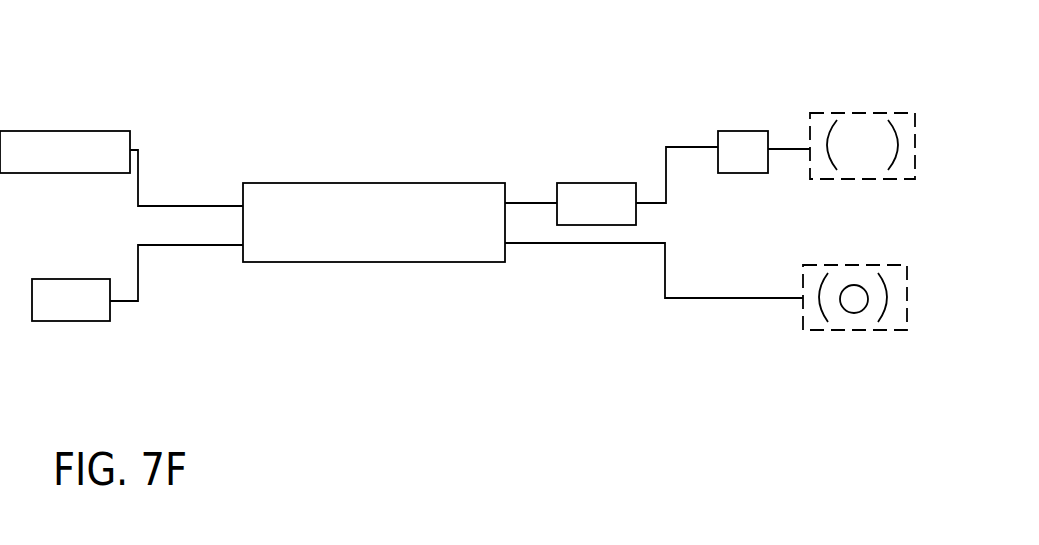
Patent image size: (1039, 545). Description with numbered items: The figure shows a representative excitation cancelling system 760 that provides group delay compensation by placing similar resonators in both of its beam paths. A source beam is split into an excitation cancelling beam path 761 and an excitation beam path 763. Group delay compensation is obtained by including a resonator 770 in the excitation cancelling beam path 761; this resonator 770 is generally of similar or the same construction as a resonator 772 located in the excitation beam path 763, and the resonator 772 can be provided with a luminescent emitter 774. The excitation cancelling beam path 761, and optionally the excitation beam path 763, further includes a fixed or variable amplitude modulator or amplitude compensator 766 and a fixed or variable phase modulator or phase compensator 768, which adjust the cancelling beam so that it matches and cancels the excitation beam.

The system 760 is at (595, 422).
The excitation cancelling beam path 761 is at (650, 118).
The excitation beam path 763 is at (610, 306).
The amplitude modulator 766 is at (557, 183).
The phase modulator 768 is at (740, 131).
The resonator 770 is at (863, 115).
The resonator 772 is at (809, 308).
The luminescent emitter 774 is at (841, 314).